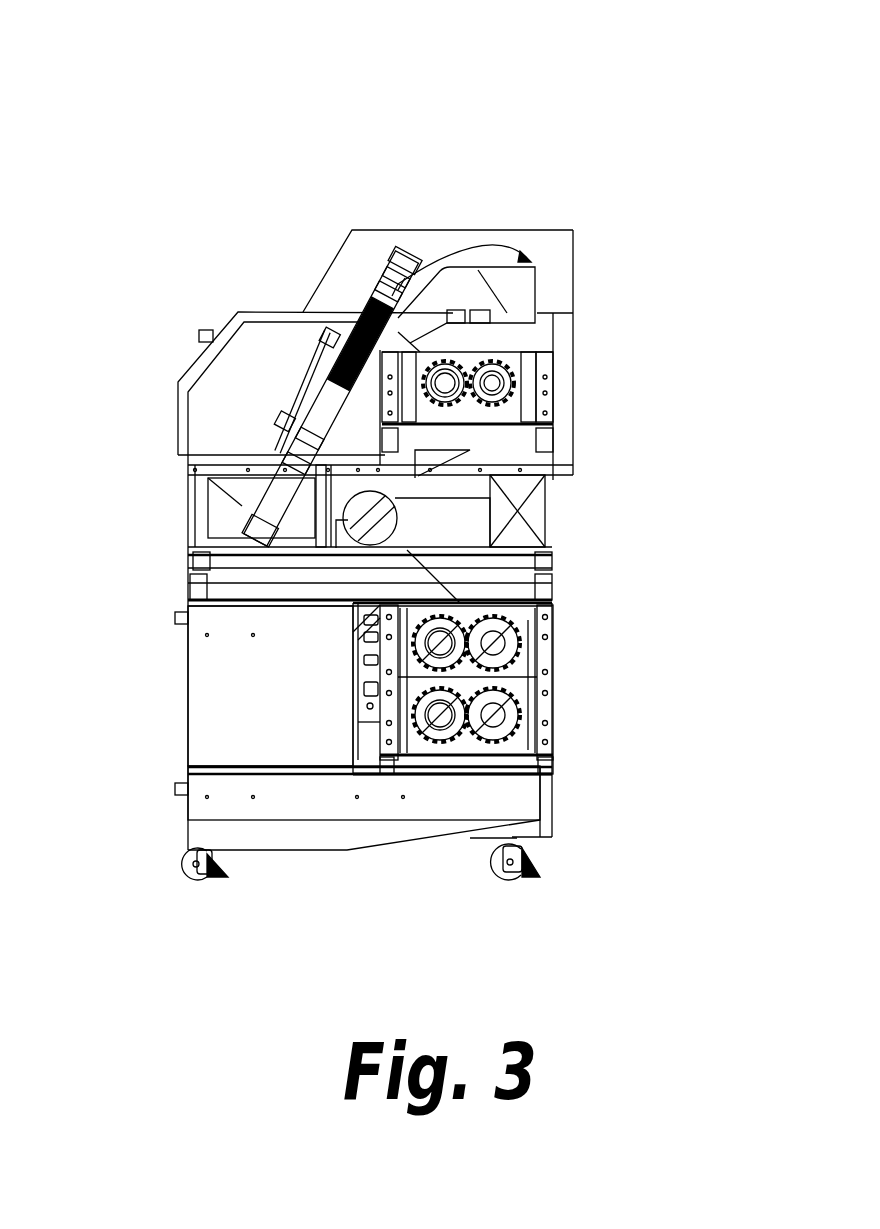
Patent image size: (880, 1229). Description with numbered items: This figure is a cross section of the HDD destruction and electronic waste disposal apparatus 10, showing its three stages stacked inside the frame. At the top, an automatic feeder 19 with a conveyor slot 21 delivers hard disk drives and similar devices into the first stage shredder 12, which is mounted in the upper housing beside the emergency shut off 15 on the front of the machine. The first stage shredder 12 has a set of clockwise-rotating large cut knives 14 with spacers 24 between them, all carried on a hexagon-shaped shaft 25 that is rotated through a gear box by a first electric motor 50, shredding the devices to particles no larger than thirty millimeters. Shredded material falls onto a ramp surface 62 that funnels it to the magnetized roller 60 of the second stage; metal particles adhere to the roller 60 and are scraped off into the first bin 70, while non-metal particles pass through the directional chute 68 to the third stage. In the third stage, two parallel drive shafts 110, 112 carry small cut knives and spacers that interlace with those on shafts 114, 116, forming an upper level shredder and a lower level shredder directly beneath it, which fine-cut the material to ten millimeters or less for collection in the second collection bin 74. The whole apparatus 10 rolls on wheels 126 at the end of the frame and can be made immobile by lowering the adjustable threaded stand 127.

The HDD destruction and electronic waste disposal apparatus 10 is at (705, 100).
The first stage shredder 12 is at (590, 320).
The large cut knives 14 is at (453, 352).
The emergency shut off 15 is at (198, 335).
The automatic feeder 19 is at (325, 300).
The conveyor slot 21 is at (342, 503).
The spacer 24 is at (513, 360).
The shaft 25 is at (498, 352).
The first electric motor 50 is at (545, 395).
The magnetized roller 60 is at (343, 508).
The ramp surface 62 is at (563, 471).
The directional chute 68 is at (548, 534).
The first bin 70 is at (212, 720).
The second collection bin 74 is at (203, 806).
The drive shaft 110 is at (425, 637).
The drive shaft 112 is at (445, 712).
The shaft 114 is at (490, 640).
The shaft 116 is at (497, 722).
The wheels 126 is at (540, 860).
The adjustable threaded stand 127 is at (222, 880).